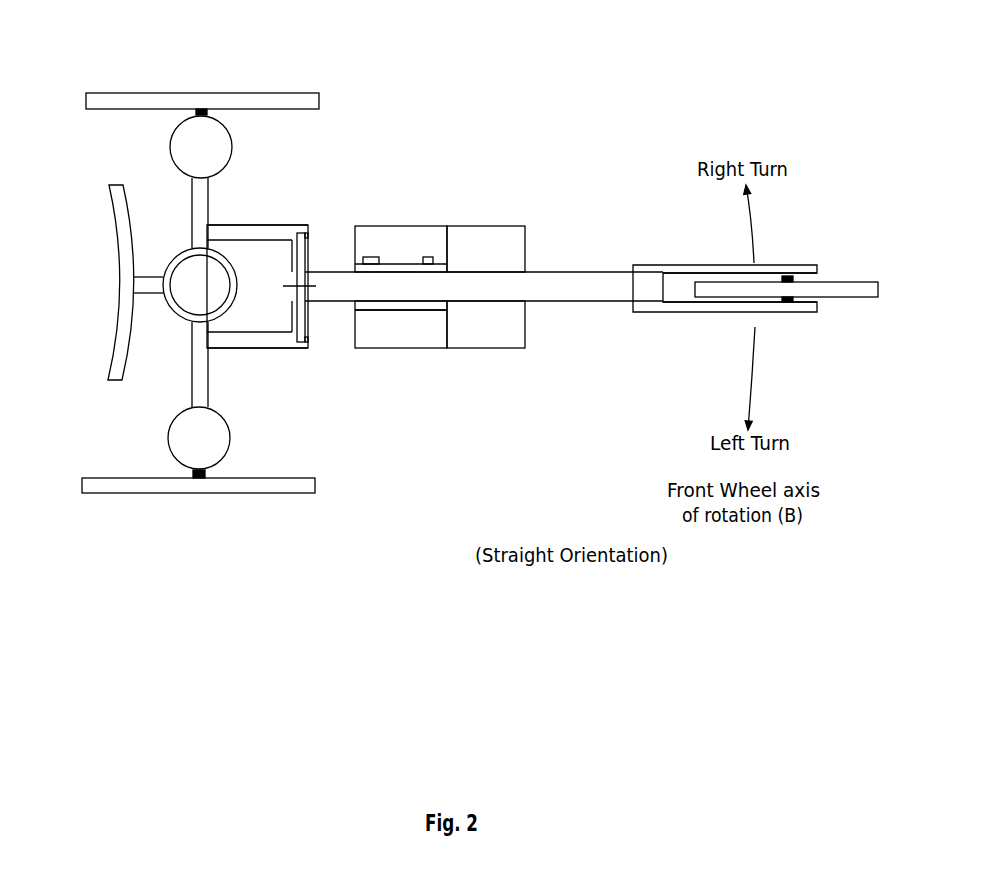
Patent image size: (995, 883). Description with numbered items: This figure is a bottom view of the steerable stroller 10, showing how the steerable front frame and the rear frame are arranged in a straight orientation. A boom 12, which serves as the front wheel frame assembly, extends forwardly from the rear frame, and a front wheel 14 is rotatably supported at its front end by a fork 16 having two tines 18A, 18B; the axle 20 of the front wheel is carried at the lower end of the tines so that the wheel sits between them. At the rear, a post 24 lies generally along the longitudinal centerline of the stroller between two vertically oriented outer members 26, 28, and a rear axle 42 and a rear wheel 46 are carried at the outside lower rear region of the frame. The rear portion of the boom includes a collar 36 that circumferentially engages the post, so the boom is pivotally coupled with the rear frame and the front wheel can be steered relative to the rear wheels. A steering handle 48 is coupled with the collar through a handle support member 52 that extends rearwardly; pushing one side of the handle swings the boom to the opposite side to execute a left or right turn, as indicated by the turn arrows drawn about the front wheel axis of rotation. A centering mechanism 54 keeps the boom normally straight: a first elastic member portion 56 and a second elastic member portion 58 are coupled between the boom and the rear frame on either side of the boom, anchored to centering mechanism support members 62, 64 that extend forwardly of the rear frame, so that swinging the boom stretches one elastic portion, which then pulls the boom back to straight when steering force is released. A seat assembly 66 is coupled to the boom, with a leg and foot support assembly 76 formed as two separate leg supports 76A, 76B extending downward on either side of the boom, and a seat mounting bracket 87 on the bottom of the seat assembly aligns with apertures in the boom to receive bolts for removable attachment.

The steerable stroller 10 is at (427, 83).
The boom 12 is at (573, 272).
The front wheel 14 is at (848, 282).
The fork 16 is at (693, 335).
The tine 18A is at (663, 303).
The tine 18B is at (663, 270).
The axle 20 is at (803, 303).
The post 24 is at (158, 263).
The outer member 26 is at (168, 438).
The outer member 28 is at (232, 147).
The collar 36 is at (178, 333).
The axle 42 is at (102, 92).
The rear wheel 46 is at (198, 493).
The steering handle 48 is at (100, 280).
The handle support member 52 is at (143, 272).
The centering mechanism 54 is at (268, 368).
The first elastic member portion 56 is at (315, 317).
The second elastic member portion 58 is at (310, 233).
The centering mechanism support member 62 is at (240, 240).
The centering mechanism support member 64 is at (222, 350).
The seat assembly 66 is at (373, 226).
The leg and foot support assembly 76 is at (453, 205).
The leg support 76A is at (483, 348).
The leg support 76B is at (487, 226).
The seat mounting bracket 87 is at (385, 310).